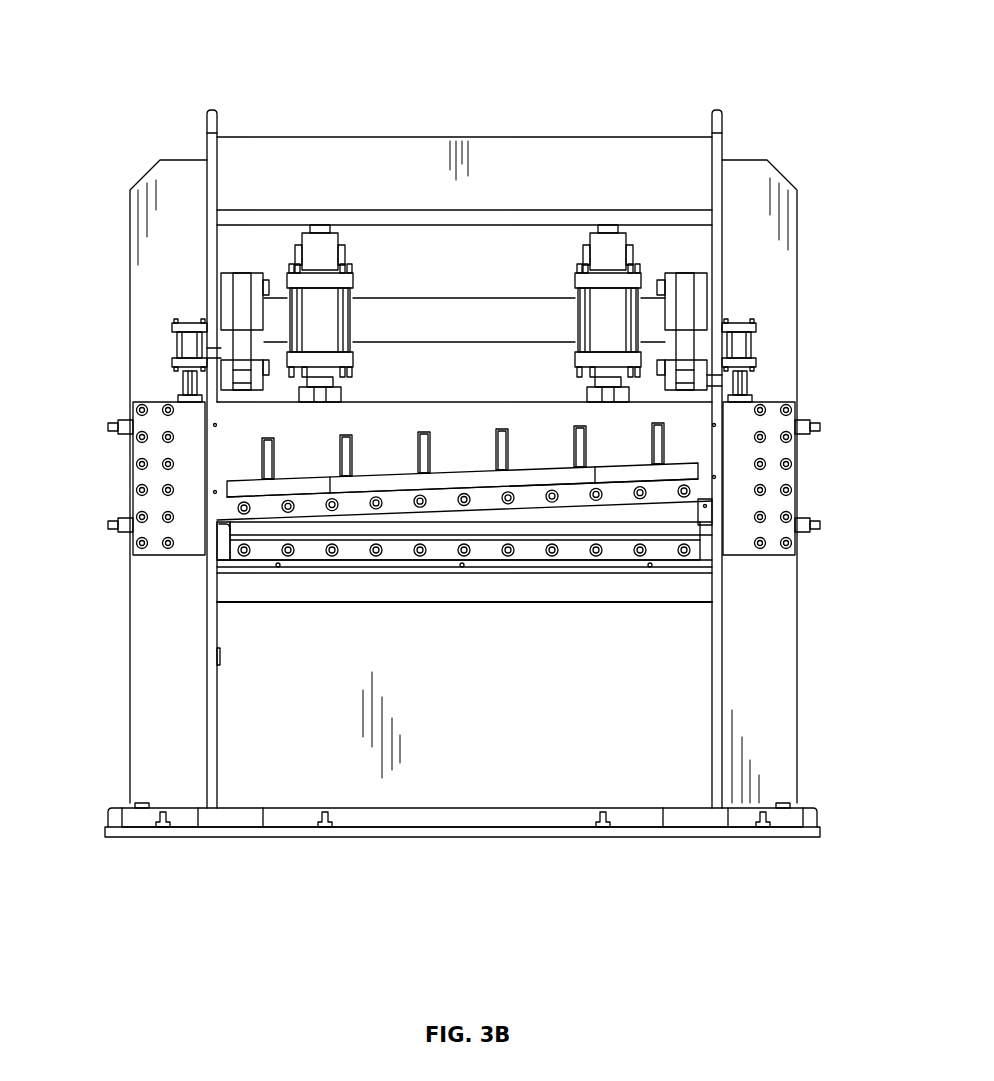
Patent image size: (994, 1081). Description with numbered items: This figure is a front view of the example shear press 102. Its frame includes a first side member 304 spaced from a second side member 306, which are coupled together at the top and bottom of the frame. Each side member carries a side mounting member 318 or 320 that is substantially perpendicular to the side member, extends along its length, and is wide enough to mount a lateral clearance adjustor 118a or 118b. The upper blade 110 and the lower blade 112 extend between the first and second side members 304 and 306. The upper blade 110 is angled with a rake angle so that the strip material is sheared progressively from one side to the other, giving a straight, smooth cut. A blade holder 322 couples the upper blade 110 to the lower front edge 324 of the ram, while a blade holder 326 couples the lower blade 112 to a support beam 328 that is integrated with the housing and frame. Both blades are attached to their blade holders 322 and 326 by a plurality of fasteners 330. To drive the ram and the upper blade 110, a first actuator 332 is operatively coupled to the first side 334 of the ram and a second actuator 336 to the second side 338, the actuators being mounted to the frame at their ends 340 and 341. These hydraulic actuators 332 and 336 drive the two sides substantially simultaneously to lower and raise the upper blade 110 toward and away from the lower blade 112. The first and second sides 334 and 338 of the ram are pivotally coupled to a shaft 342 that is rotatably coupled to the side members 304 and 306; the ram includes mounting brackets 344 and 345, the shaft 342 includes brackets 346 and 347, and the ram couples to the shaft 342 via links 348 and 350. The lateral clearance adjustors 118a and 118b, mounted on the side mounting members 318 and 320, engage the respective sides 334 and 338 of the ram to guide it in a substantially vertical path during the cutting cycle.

The shear press 102 is at (316, 34).
The first side member 304 is at (722, 122).
The second side member 306 is at (205, 124).
The side mounting member 318 is at (798, 228).
The side mounting member 320 is at (130, 222).
The end of actuator 340 is at (608, 232).
The end of actuator 341 is at (318, 232).
The first actuator 332 is at (572, 283).
The second actuator 336 is at (355, 283).
The shaft 342 is at (418, 343).
The bracket 346 is at (672, 273).
The bracket 347 is at (253, 273).
The link 348 is at (685, 318).
The link 350 is at (240, 318).
The lateral clearance adjustor 118a is at (156, 334).
The lateral clearance adjustor 118b is at (777, 370).
The mounting bracket 344 is at (705, 380).
The mounting bracket 345 is at (230, 357).
The first side of the ram 334 is at (688, 413).
The second side of the ram 338 is at (222, 440).
The lower front edge of the ram 324 is at (708, 488).
The blade holder 326 is at (573, 551).
The fasteners 330 is at (330, 510).
The support beam 328 is at (230, 525).
The upper blade 110 is at (225, 557).
The lower blade 112 is at (449, 538).
The blade holder 322 is at (668, 530).